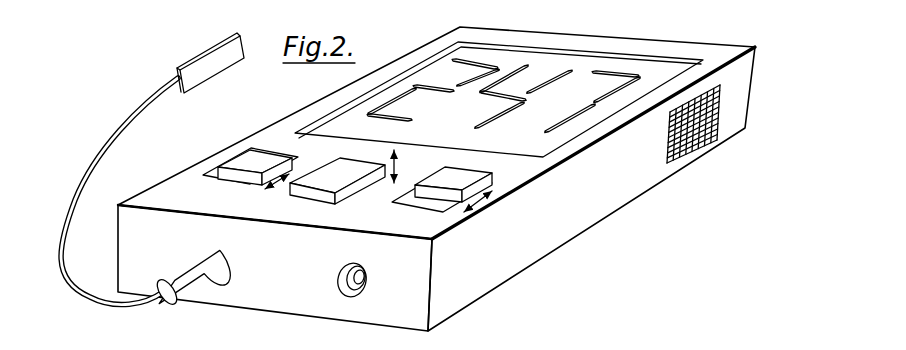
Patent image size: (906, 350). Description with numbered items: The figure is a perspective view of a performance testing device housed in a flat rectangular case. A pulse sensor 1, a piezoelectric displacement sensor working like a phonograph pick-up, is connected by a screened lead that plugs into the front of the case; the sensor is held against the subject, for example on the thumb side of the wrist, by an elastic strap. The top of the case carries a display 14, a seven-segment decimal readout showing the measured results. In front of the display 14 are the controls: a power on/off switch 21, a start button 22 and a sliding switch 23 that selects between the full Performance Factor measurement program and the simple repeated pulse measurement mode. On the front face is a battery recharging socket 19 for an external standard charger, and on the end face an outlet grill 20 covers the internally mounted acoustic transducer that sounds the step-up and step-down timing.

The pulse sensor 1 is at (226, 61).
The display 14 is at (550, 57).
The battery recharging socket 19 is at (365, 276).
The outlet grill 20 is at (681, 160).
The power on/off switch 21 is at (233, 160).
The start button 22 is at (310, 199).
The PM/PF selector switch 23 is at (490, 183).